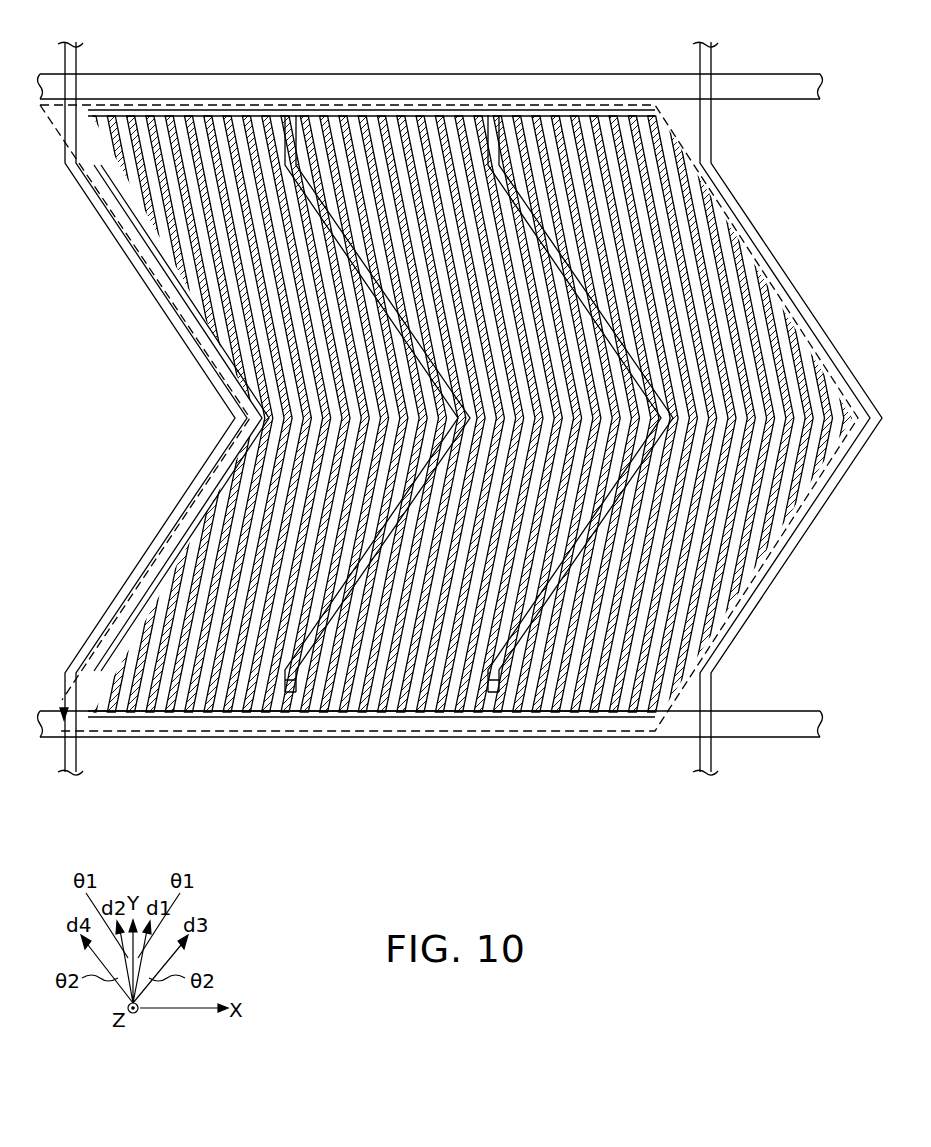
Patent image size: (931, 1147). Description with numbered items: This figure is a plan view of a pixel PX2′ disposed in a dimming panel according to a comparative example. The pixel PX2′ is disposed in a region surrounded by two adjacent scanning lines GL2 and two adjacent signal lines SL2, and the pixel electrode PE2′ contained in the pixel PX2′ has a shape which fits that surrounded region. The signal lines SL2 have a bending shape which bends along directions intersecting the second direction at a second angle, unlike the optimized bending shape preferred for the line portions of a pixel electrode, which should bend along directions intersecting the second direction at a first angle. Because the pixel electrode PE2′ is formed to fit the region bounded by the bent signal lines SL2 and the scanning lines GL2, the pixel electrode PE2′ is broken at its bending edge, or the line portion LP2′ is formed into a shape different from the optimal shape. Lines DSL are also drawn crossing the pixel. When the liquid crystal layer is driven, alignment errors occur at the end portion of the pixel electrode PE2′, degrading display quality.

The scanning line GL2 is at (430, 90).
The signal line SL2 is at (78, 56).
The pixel PX2′ is at (212, 104).
The pixel electrode PE2′ is at (587, 110).
The dummy source line / shield line DSL is at (291, 114).
The line portion LP2′ is at (132, 228).